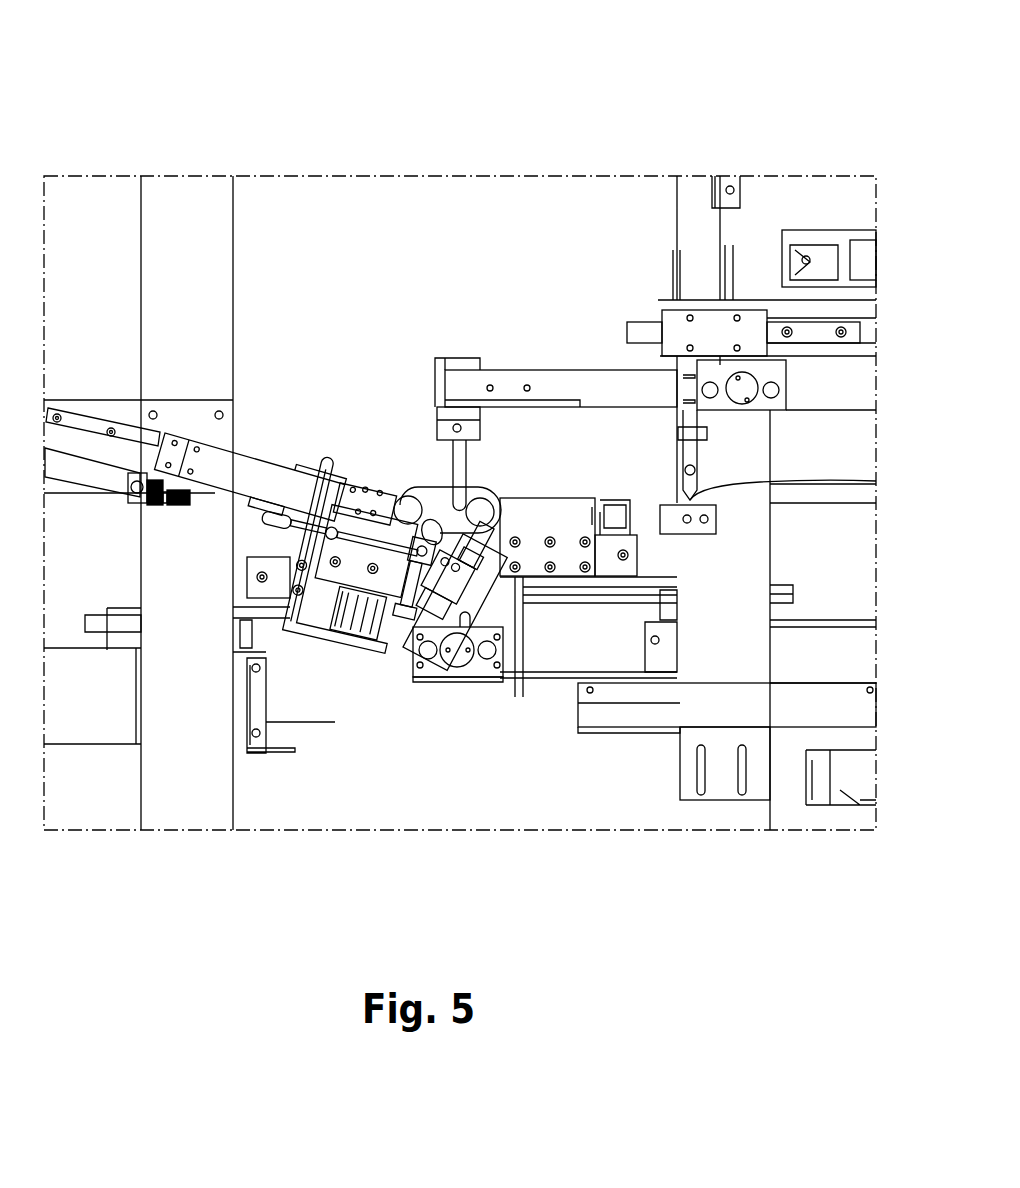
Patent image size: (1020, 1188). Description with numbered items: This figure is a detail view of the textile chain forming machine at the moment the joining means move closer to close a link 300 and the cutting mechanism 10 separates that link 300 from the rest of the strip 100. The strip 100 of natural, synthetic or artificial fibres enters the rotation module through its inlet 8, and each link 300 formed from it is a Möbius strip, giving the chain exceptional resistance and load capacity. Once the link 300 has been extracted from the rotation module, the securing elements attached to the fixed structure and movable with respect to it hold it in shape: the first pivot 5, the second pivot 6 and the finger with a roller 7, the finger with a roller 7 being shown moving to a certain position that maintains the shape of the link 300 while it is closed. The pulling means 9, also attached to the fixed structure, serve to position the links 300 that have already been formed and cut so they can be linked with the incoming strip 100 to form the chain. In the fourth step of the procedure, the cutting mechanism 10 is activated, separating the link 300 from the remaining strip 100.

The first pivot 5 is at (480, 512).
The second pivot 6 is at (360, 640).
The finger with a roller 7 is at (478, 573).
The inlet 8 is at (388, 507).
The pulling means 9 is at (460, 470).
The cutting mechanism 10 is at (688, 453).
The strip 100 is at (818, 480).
The link 300 is at (435, 493).